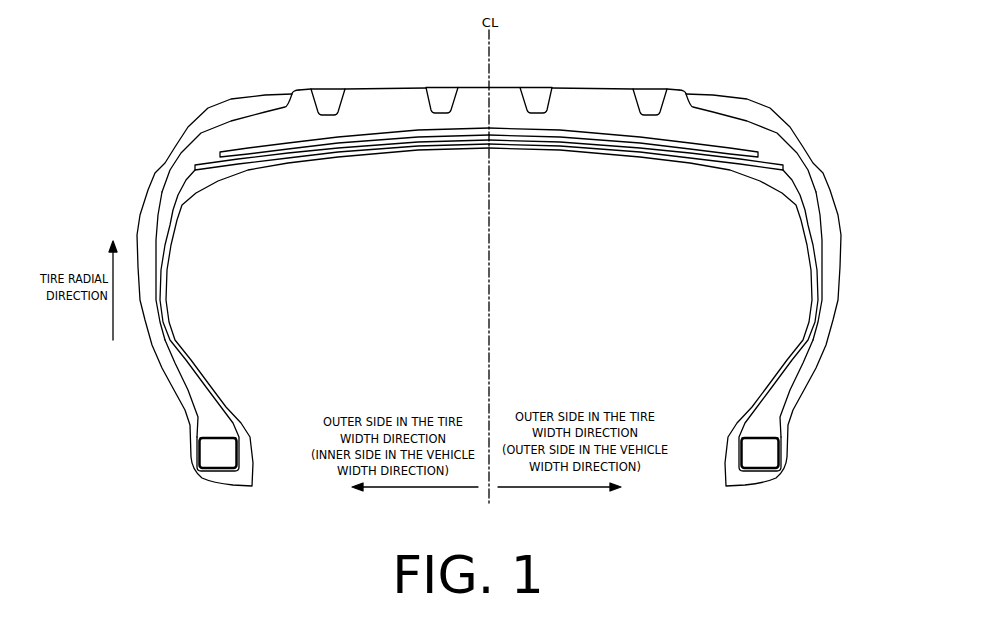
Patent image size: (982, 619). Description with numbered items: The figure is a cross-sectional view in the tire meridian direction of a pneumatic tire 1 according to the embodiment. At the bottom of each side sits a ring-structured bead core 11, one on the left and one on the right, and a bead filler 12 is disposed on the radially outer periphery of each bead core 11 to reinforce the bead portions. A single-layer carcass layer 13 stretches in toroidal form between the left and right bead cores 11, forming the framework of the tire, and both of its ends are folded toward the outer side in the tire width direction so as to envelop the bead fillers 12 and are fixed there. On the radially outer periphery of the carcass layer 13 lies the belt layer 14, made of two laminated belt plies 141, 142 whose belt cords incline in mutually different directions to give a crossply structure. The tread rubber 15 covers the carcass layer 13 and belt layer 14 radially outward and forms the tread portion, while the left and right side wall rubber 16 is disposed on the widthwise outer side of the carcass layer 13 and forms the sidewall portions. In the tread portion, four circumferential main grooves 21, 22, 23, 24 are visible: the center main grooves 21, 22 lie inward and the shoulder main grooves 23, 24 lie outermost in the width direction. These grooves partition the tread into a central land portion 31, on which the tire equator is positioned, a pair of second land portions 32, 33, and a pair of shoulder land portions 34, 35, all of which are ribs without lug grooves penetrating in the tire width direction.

The pneumatic tire 1 is at (727, 53).
The bead core 11 is at (752, 453).
The bead filler 12 is at (760, 418).
The carcass layer 13 is at (817, 253).
The belt layer 14 is at (672, 218).
The belt ply 141 is at (720, 154).
The belt ply 142 is at (693, 148).
The tread rubber 15 is at (747, 98).
The side wall rubber 16 is at (842, 233).
The circumferential main groove 21 is at (535, 92).
The circumferential main groove 22 is at (443, 93).
The circumferential main groove 23 is at (650, 93).
The circumferential main groove 24 is at (332, 95).
The central land portion 31 is at (505, 88).
The second land portion 32 is at (597, 88).
The second land portion 33 is at (393, 97).
The shoulder land portion 34 is at (677, 89).
The shoulder land portion 35 is at (298, 89).